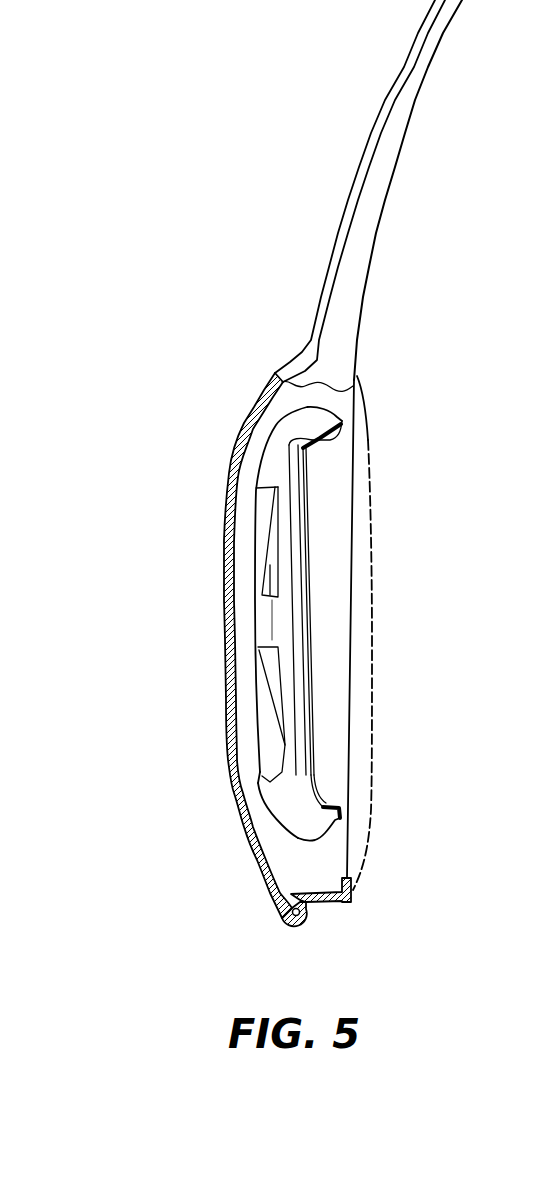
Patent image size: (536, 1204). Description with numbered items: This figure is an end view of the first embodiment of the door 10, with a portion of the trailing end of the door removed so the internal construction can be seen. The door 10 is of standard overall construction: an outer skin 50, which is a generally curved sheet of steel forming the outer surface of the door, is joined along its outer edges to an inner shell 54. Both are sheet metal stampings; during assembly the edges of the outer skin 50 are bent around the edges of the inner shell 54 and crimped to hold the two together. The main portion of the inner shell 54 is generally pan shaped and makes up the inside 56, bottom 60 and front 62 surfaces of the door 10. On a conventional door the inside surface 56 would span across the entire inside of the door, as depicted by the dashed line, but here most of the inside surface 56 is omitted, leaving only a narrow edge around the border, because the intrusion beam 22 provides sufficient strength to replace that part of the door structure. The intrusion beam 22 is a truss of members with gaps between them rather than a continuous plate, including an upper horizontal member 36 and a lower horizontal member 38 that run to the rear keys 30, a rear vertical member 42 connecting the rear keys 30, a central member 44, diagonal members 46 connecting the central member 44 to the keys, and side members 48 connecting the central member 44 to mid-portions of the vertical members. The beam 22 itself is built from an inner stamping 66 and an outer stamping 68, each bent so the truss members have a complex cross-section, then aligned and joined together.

The door 10 is at (176, 414).
The intrusion beam 22 is at (150, 576).
The rear keys 30 is at (342, 420).
The upper horizontal member 36 is at (255, 462).
The lower horizontal member 38 is at (272, 785).
The rear vertical member 42 is at (287, 562).
The central member 44 is at (258, 618).
The diagonal members 46 is at (260, 540).
The side members 48 is at (285, 638).
The outer skin 50 is at (258, 876).
The inner shell 54 is at (343, 905).
The inside surface 56 is at (355, 480).
The bottom 60 is at (318, 903).
The front 62 is at (343, 524).
The inner stamping 66 is at (310, 703).
The outer stamping 68 is at (283, 820).